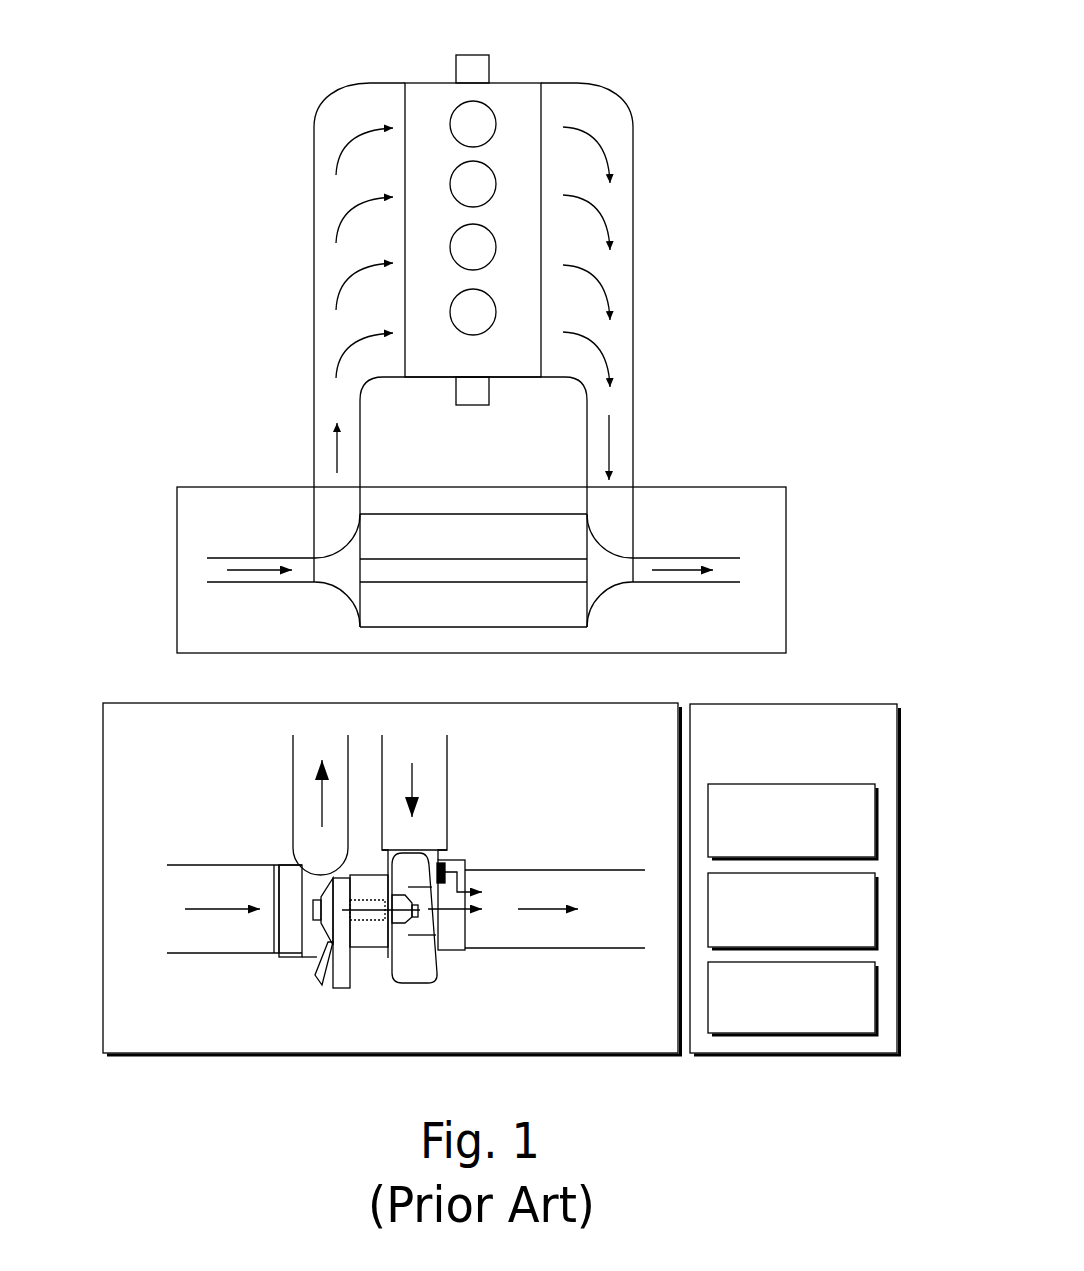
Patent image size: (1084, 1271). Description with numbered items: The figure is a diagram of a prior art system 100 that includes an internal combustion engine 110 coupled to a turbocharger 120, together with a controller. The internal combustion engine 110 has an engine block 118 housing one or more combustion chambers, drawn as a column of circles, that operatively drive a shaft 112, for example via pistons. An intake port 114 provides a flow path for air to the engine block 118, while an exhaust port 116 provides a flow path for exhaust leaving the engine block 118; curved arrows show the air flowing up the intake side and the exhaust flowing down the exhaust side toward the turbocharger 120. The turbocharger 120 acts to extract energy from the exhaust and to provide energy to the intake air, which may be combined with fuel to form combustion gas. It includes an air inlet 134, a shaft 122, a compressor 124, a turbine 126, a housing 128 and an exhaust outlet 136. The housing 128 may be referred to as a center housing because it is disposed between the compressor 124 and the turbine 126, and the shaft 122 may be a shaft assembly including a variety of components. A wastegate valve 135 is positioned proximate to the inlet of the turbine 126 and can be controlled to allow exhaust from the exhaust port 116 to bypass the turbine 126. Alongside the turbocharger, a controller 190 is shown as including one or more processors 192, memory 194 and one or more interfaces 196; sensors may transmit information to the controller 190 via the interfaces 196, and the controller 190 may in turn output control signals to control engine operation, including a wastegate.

The prior art system 100 is at (651, 33).
The internal combustion engine 110 is at (458, 198).
The shaft 112 is at (499, 46).
The intake port 114 is at (315, 469).
The exhaust port 116 is at (543, 516).
The engine block 118 is at (491, 371).
The turbocharger 120 is at (444, 751).
The shaft 122 is at (442, 804).
The compressor 124 is at (301, 755).
The turbine 126 is at (533, 766).
The housing 128 is at (496, 548).
The air inlet 134 is at (225, 749).
The wastegate valve 135 is at (485, 858).
The exhaust outlet 136 is at (597, 754).
The controller 190 is at (806, 773).
The processors 192 is at (808, 843).
The memory 194 is at (808, 933).
The interfaces 196 is at (810, 1021).